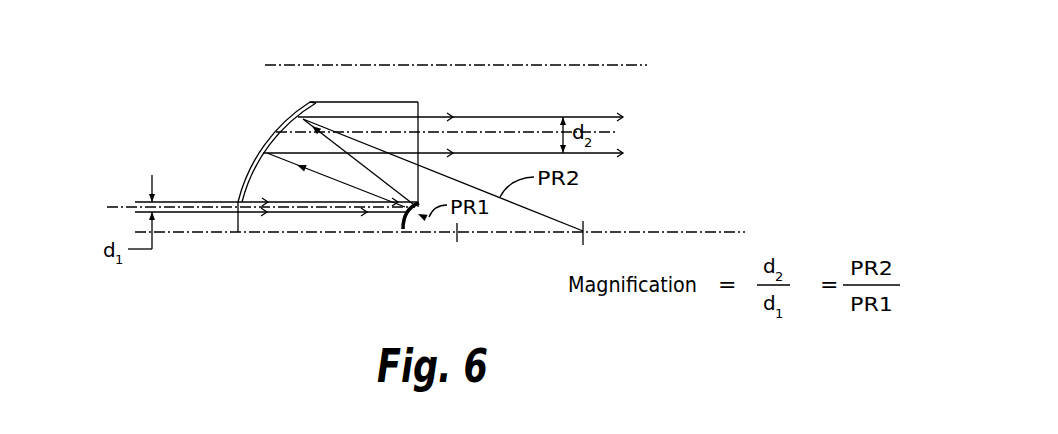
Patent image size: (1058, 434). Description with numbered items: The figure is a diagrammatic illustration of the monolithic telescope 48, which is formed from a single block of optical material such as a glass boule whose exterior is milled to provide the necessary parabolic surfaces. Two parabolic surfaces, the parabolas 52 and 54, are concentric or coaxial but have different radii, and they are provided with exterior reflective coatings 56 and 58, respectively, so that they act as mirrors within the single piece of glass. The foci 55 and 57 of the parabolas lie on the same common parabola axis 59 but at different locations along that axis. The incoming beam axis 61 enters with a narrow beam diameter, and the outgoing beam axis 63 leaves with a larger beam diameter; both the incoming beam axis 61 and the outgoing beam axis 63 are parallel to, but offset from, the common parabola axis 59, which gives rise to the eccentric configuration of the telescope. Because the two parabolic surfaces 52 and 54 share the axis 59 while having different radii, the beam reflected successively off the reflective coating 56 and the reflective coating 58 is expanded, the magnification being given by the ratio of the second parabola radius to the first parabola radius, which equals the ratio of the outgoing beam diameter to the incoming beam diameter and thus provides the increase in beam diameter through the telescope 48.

The monolithic telescope 48 is at (328, 151).
The parabola 52 is at (396, 222).
The parabola 54 is at (213, 196).
The focus 55 is at (418, 214).
The exterior reflective coating 56 is at (407, 224).
The focus 57 is at (586, 227).
The exterior reflective coating 58 is at (258, 146).
The common parabola axis 59 is at (696, 231).
The incoming beam axis 61 is at (110, 212).
The outgoing beam axis 63 is at (645, 120).